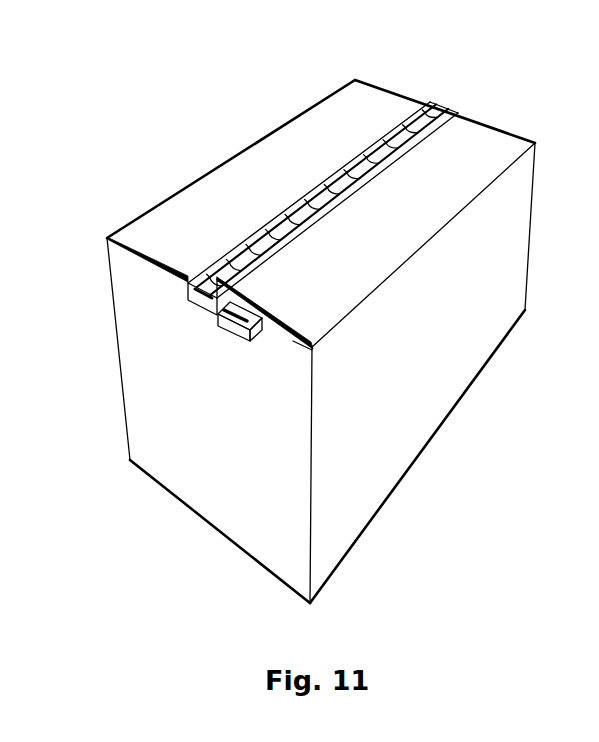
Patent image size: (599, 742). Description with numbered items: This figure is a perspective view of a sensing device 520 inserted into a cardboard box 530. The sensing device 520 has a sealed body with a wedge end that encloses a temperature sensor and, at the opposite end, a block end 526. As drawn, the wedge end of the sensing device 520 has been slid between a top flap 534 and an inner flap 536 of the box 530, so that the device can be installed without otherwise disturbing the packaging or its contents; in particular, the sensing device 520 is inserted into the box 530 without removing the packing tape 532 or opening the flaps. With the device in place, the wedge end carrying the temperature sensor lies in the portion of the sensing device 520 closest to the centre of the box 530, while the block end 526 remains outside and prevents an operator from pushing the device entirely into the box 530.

The sensing device 520 is at (249, 305).
The block end 526 is at (262, 343).
The cardboard box 530 is at (113, 340).
The packing tape 532 is at (433, 112).
The top flap 534 is at (280, 313).
The inner flap 536 is at (293, 343).